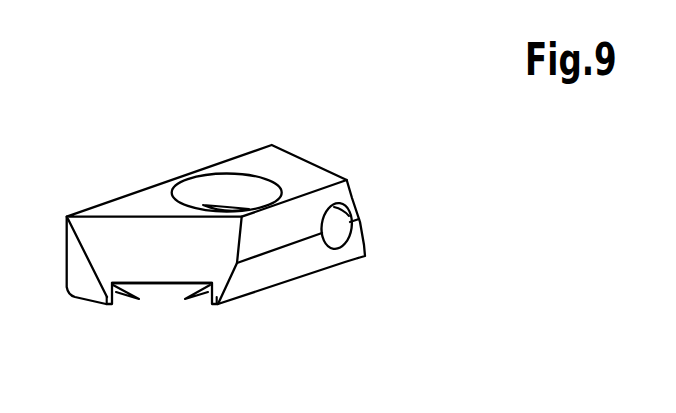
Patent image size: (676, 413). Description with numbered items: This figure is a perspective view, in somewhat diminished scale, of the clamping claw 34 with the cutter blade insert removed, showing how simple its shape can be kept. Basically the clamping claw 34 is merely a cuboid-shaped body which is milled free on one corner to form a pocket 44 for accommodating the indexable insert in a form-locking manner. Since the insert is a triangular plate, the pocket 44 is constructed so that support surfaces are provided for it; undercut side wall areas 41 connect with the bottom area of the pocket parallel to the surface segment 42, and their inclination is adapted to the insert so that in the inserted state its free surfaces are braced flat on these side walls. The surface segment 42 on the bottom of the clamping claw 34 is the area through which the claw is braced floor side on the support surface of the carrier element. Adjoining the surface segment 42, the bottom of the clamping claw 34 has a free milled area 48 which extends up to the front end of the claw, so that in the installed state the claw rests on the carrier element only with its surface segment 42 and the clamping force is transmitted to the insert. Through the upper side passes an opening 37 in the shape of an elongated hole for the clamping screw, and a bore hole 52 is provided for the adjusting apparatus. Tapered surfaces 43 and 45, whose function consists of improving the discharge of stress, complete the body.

The clamping claw 34 is at (293, 159).
The opening 37 is at (222, 210).
The undercut side wall areas 41 is at (198, 287).
The surface segment 42 is at (358, 258).
The tapered surface 43 is at (107, 238).
The pocket 44 is at (158, 289).
The tapered surface 45 is at (331, 198).
The free milled area 48 is at (285, 282).
The bore hole 52 is at (352, 211).